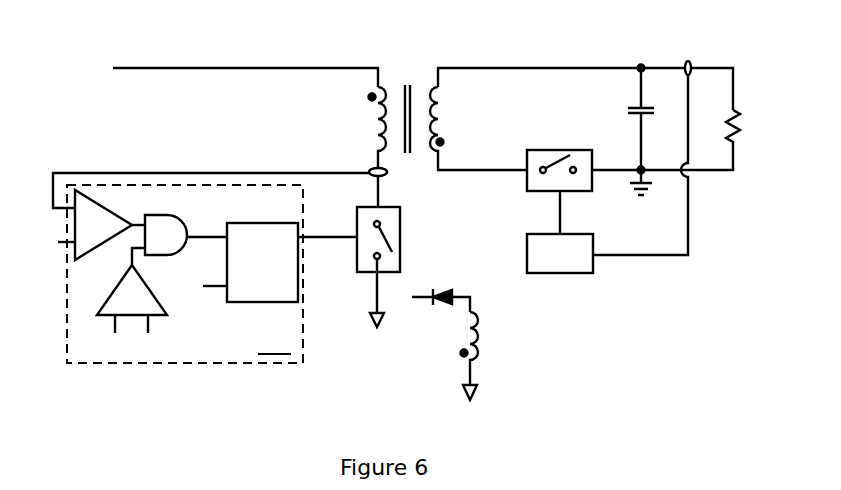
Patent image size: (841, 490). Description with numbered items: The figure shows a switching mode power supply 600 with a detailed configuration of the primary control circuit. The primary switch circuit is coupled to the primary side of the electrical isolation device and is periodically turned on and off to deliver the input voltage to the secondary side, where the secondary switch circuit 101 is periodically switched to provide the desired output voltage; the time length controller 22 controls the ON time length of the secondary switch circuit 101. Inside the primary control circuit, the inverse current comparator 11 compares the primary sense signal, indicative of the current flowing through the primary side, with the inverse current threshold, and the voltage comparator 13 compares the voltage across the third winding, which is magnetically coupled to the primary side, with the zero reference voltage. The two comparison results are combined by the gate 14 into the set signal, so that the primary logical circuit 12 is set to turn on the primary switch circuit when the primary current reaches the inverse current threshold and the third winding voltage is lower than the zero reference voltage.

The switching mode power supply 600 is at (115, 42).
The inverse current comparator 11 is at (95, 225).
The primary logical circuit 12 is at (250, 262).
The voltage comparator 13 is at (132, 299).
The AND gate 14 is at (166, 235).
The secondary switch circuit 101 is at (538, 174).
The time length controller 22 is at (560, 253).